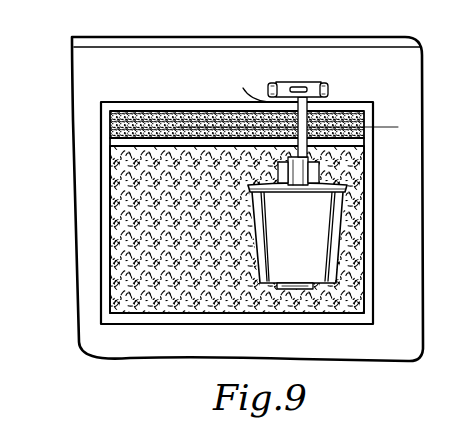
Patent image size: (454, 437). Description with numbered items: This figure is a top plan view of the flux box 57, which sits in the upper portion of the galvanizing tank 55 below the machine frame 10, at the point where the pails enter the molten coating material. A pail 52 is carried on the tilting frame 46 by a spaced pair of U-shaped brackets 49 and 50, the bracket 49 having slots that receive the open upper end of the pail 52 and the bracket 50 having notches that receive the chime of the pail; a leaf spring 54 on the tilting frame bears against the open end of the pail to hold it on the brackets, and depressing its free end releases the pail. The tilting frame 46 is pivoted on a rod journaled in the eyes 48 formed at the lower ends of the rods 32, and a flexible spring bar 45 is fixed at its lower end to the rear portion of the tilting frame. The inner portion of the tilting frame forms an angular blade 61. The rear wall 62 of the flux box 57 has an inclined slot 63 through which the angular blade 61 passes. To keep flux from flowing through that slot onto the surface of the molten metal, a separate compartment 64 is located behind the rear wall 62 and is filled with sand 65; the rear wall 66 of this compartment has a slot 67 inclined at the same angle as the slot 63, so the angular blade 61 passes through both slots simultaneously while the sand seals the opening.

The frame 10 is at (181, 101).
The rods 32 is at (323, 84).
The flexible or spring bar 45 is at (310, 78).
The tilting frame 46 is at (282, 82).
The eyes 48 is at (270, 85).
The U-shaped bracket 49 is at (320, 174).
The U-shaped bracket 50 is at (308, 290).
The pail 52 is at (297, 233).
The leaf spring 54 is at (298, 184).
The galvanizing tank 55 is at (96, 44).
The flux box 57 is at (370, 239).
The angular blade 61 is at (308, 125).
The rear wall of the flux box 62 is at (350, 142).
The slot 63 is at (305, 151).
The separate compartment 64 is at (227, 120).
The sand 65 is at (141, 118).
The rear wall of the compartment 66 is at (350, 108).
The slot 67 is at (243, 88).